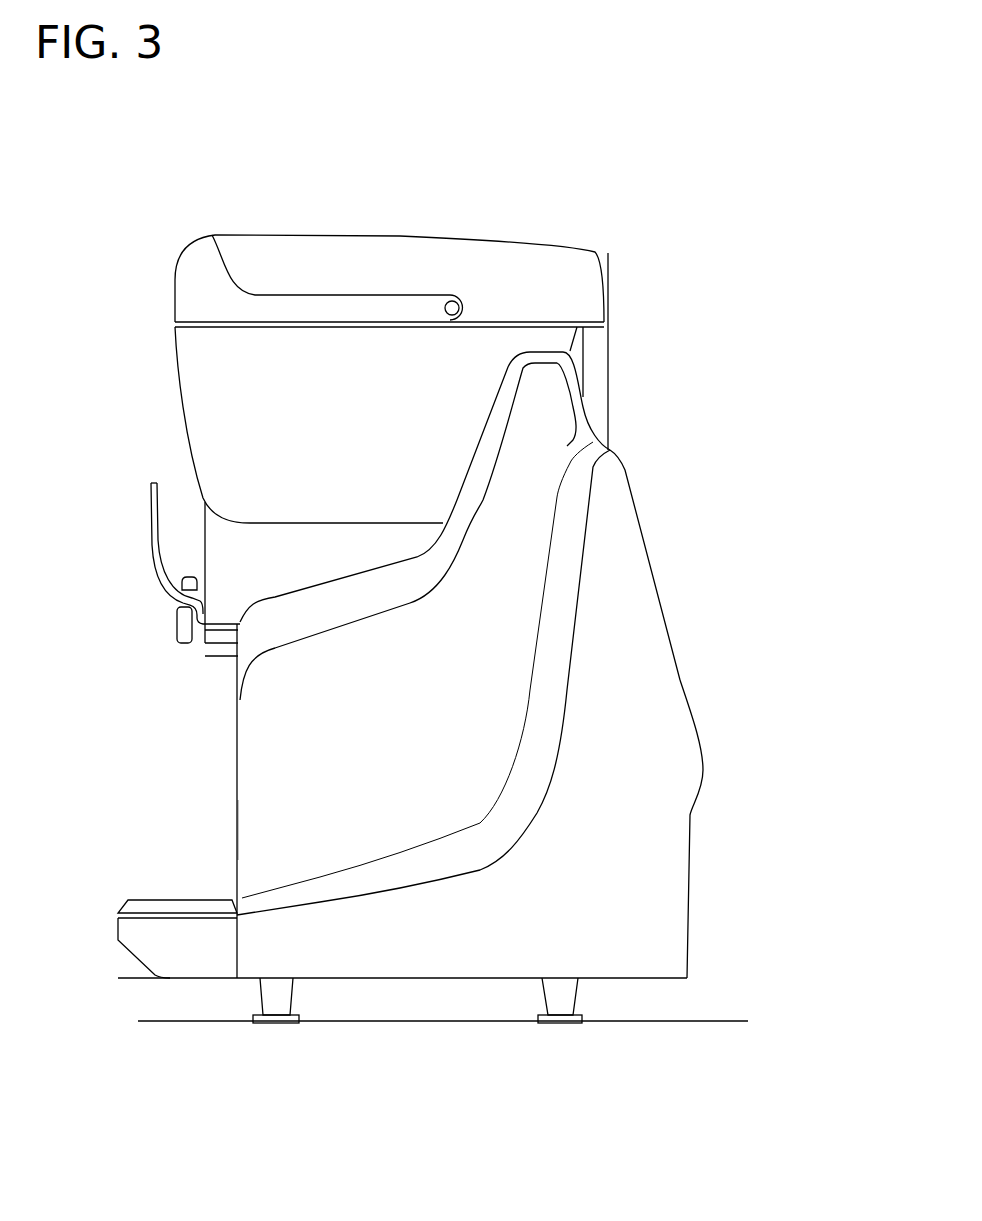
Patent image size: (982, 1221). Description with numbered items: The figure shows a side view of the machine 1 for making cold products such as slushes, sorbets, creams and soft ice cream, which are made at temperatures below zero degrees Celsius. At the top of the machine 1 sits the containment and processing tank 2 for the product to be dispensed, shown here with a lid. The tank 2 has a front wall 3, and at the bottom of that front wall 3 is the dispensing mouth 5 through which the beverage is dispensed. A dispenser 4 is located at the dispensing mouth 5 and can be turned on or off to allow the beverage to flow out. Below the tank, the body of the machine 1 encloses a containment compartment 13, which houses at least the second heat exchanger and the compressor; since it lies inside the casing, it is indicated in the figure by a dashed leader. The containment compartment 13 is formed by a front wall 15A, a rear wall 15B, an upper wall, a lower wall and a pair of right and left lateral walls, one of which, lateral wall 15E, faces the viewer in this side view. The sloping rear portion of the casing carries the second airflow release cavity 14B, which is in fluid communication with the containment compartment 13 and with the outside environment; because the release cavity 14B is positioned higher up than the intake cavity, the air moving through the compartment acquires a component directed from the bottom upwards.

The machine 1 is at (680, 425).
The containment and processing tank 2 is at (160, 352).
The front wall 3 is at (160, 388).
The dispenser 4 is at (145, 594).
The dispensing mouth 5 is at (218, 630).
The containment compartment 13 is at (220, 830).
The second airflow release cavity 14B is at (690, 597).
The front wall 15A is at (225, 765).
The rear wall 15B is at (720, 718).
The lateral wall 15E is at (378, 745).